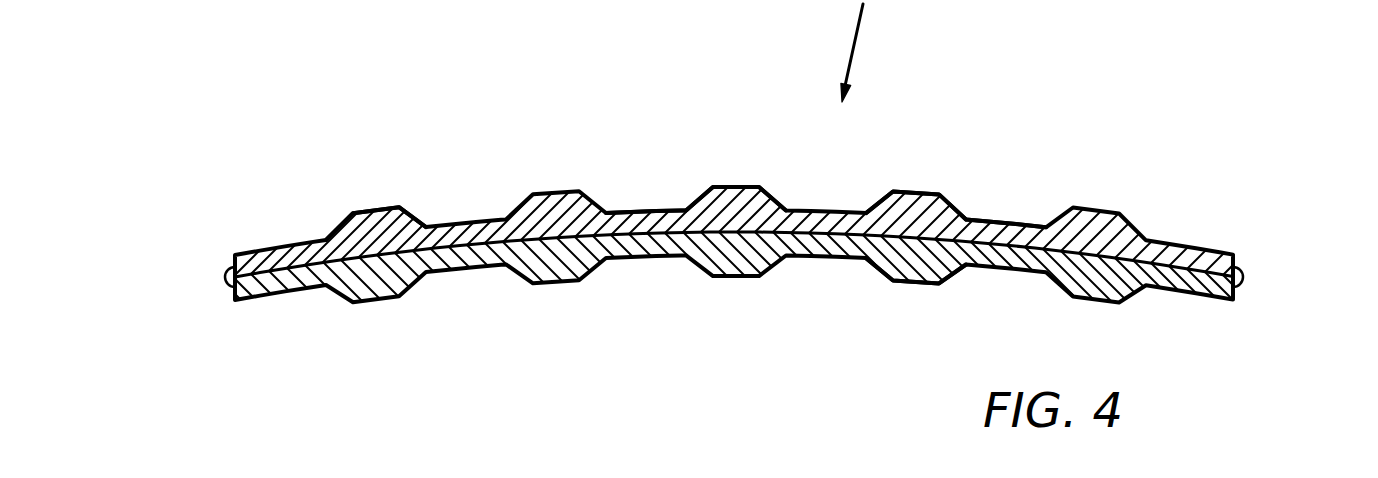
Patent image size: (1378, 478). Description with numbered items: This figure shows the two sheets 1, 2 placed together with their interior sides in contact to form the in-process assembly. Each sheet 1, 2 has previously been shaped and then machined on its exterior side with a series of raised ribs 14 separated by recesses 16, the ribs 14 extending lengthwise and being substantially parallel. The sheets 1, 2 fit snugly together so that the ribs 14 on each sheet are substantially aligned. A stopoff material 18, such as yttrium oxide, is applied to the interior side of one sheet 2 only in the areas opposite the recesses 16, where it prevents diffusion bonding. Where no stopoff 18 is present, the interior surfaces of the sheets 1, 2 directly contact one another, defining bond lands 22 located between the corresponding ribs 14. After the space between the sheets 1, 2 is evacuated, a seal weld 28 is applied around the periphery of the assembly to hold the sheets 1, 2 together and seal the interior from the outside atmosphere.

The sheet 1 is at (1183, 257).
The sheet 2 is at (1192, 280).
The raised ribs 14 is at (353, 212).
The recesses 16 is at (628, 212).
The stopoff material 18 is at (663, 217).
The bond lands 22 is at (723, 225).
The seal weld 28 is at (228, 290).